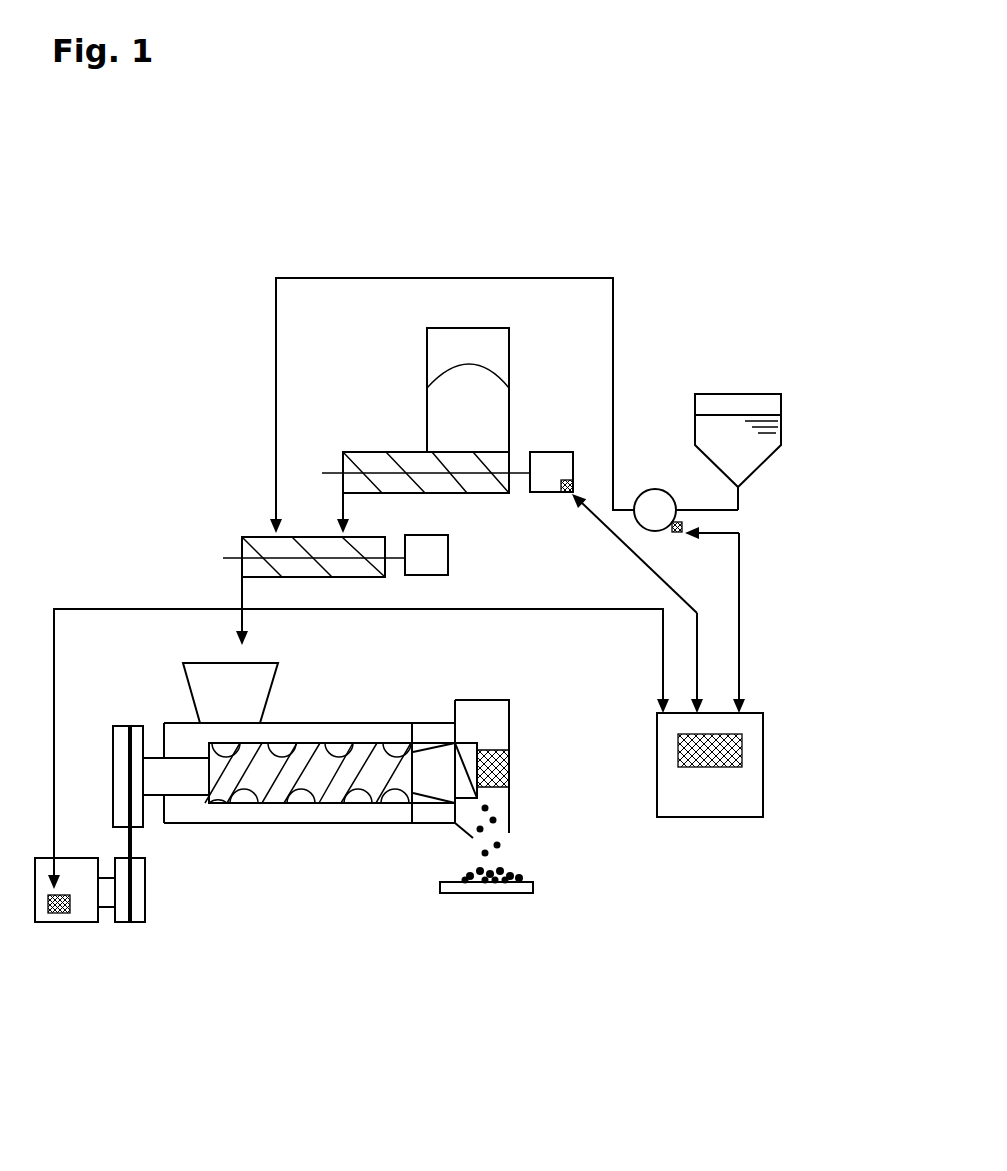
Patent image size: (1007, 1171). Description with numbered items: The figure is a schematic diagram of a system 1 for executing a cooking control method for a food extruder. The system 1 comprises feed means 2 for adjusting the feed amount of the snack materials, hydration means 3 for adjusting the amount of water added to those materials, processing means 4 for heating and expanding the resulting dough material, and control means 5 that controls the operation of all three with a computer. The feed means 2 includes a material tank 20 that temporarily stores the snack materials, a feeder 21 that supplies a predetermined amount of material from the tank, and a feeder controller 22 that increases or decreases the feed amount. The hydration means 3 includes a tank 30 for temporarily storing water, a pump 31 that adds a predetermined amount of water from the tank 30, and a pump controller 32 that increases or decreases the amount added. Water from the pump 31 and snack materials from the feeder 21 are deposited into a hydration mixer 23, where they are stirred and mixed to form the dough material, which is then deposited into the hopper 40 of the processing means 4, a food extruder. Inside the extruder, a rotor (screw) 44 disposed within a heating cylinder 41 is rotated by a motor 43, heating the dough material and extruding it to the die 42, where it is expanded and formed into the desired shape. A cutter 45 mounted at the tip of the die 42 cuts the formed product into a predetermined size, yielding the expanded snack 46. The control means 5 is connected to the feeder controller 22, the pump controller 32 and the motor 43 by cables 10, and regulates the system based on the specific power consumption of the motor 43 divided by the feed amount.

The system 1 is at (120, 440).
The feed means 2 is at (540, 370).
The hydration means 3 is at (660, 418).
The processing means 4 is at (234, 878).
The control means 5 is at (714, 830).
The cables 10 is at (107, 609).
The material tank 20 is at (427, 345).
The feeder 21 is at (372, 462).
The feeder controller 22 is at (572, 452).
The hydration mixer 23 is at (250, 545).
The tank 30 is at (781, 418).
The pump 31 is at (650, 490).
The pump controller 32 is at (678, 536).
The hopper 40 is at (220, 700).
The heating cylinder 41 is at (317, 825).
The die 42 is at (470, 745).
The motor 43 is at (80, 915).
The rotor (screw) 44 is at (322, 762).
The cutter 45 is at (510, 762).
The expanded snack 46 is at (500, 843).